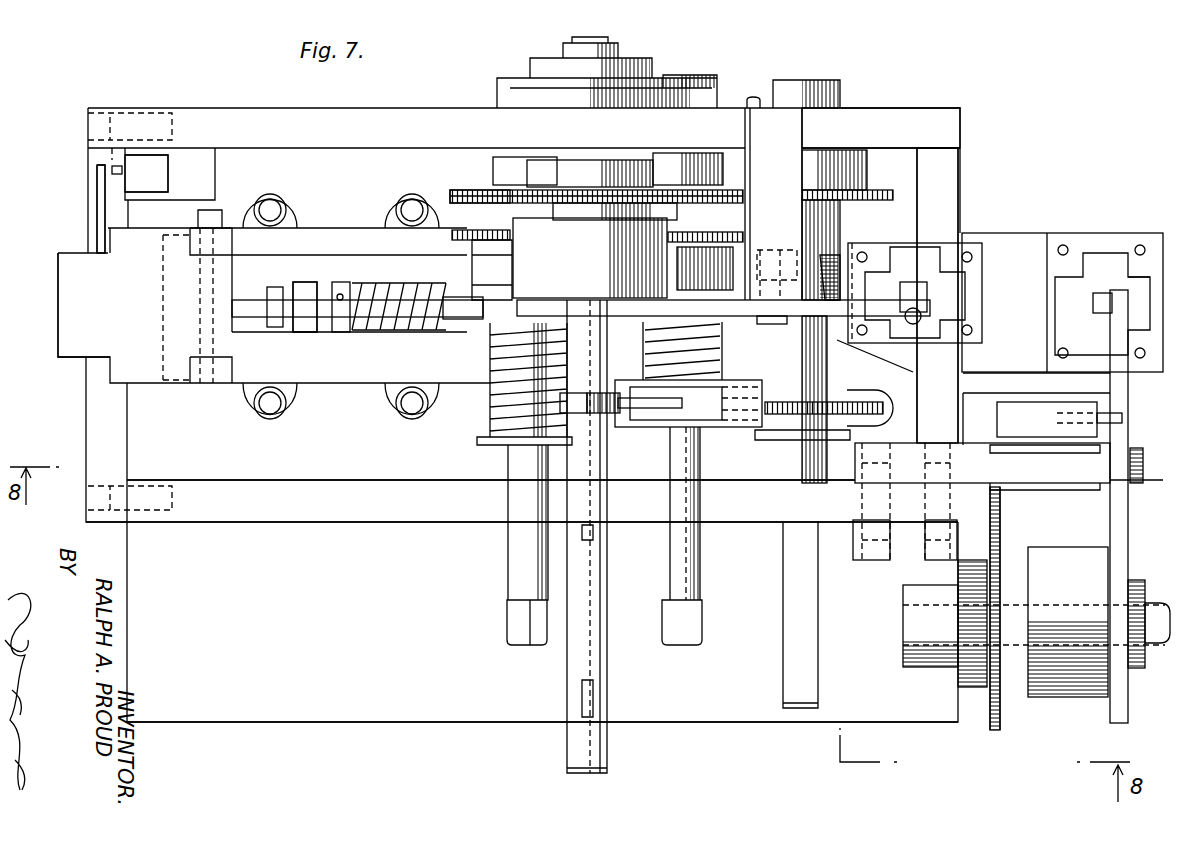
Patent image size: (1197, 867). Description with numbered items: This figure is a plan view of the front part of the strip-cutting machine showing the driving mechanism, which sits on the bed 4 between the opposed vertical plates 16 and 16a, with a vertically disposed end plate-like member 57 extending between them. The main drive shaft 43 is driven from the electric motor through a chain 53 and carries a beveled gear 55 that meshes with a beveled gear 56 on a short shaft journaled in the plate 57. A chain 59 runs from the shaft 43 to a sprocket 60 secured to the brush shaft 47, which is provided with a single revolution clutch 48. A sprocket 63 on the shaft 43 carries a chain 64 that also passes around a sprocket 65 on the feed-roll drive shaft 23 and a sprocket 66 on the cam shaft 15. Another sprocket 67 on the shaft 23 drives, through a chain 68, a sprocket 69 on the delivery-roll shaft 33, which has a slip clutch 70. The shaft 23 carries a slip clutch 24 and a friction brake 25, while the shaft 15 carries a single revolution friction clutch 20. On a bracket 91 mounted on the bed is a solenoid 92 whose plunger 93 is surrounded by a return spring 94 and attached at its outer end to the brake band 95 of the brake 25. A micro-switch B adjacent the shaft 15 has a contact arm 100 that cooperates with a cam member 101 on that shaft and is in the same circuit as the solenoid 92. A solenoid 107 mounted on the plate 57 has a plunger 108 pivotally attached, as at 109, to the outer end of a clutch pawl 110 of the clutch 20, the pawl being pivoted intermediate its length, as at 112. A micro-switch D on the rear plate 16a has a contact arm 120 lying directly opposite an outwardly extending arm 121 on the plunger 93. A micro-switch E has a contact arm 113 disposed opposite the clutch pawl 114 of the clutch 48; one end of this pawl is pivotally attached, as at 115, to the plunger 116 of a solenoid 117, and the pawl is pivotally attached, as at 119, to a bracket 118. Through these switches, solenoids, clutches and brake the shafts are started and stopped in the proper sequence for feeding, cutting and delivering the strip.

The bed 4 is at (378, 712).
The shaft 15 is at (574, 663).
The plate 16 is at (320, 505).
The plate 16a is at (880, 122).
The single revolution friction clutch 20 is at (478, 265).
The drive shaft 23 is at (510, 578).
The slip clutch 24 is at (503, 372).
The friction brake 25 is at (485, 320).
The shaft 33 is at (686, 572).
The main drive shaft 43 is at (784, 688).
The shaft 47 is at (1156, 612).
The single revolution clutch 48 is at (1080, 680).
The chain 53 is at (846, 408).
The beveled gear 55 is at (830, 248).
The beveled gear 56 is at (870, 268).
The end plate-like member 57 is at (945, 178).
The chain 59 is at (996, 520).
The sprocket 60 is at (1001, 705).
The sprocket 63 is at (876, 200).
The chain 64 is at (736, 200).
The sprocket 65 is at (462, 190).
The sprocket 66 is at (570, 195).
The sprocket 67 is at (460, 243).
The chain 68 is at (505, 238).
The sprocket 69 is at (724, 230).
The slip clutch 70 is at (698, 345).
The bracket 91 is at (247, 374).
The solenoid 92 is at (72, 313).
The plunger 93 is at (362, 292).
The spring 94 is at (378, 326).
The brake band 95 is at (452, 306).
The contact arm 100 is at (646, 408).
The cam member 101 is at (590, 405).
The solenoid 107 is at (920, 255).
The plunger 108 is at (930, 293).
The pivot 109 is at (915, 282).
The clutch pawl 110 is at (622, 300).
The pivot 112 is at (768, 320).
The contact arm 113 is at (1125, 420).
The clutch pawl 114 is at (1128, 517).
The pivot 115 is at (1152, 372).
The plunger 116 is at (1102, 292).
The solenoid 117 is at (1152, 262).
The bracket 118 is at (1072, 475).
The pivot 119 is at (1143, 478).
The contact arm 120 is at (118, 168).
The arm 121 is at (98, 220).
The micro-switch B is at (698, 398).
The micro-switch D is at (152, 170).
The micro-switch E is at (1022, 412).